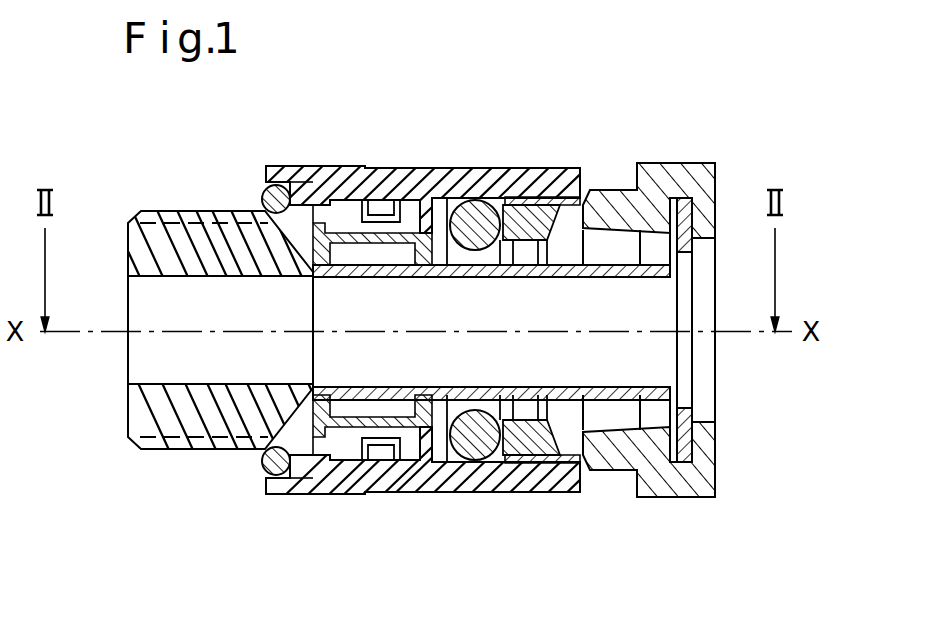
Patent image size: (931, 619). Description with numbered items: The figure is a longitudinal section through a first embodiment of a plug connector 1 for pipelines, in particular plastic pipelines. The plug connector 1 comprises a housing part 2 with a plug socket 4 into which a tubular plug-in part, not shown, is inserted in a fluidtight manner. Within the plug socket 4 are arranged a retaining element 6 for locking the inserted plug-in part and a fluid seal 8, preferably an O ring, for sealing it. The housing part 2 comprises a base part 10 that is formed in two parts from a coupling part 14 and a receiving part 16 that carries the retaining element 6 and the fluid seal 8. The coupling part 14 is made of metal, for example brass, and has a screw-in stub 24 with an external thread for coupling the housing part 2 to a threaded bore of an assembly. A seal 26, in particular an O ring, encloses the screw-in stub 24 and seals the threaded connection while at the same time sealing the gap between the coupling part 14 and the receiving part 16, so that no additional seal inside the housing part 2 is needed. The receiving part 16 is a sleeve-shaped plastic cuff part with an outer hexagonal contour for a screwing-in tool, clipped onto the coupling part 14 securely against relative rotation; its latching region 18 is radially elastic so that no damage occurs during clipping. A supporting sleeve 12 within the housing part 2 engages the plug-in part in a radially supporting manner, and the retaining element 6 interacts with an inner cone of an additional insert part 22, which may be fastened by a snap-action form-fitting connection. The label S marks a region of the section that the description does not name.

The plug connector 1 is at (138, 467).
The housing part 2 is at (412, 492).
The plug socket 4 is at (603, 255).
The retaining element 6 is at (523, 215).
The fluid seal 8 is at (462, 199).
The base part 10 is at (484, 167).
The supporting sleeve 12 is at (357, 268).
The coupling part 14 is at (303, 240).
The receiving part 16 is at (377, 187).
The latching region 18 is at (400, 464).
The insert part 22 is at (565, 172).
The screw-in stub 24 is at (187, 443).
The seal 26 is at (263, 468).
The slot S is at (297, 477).